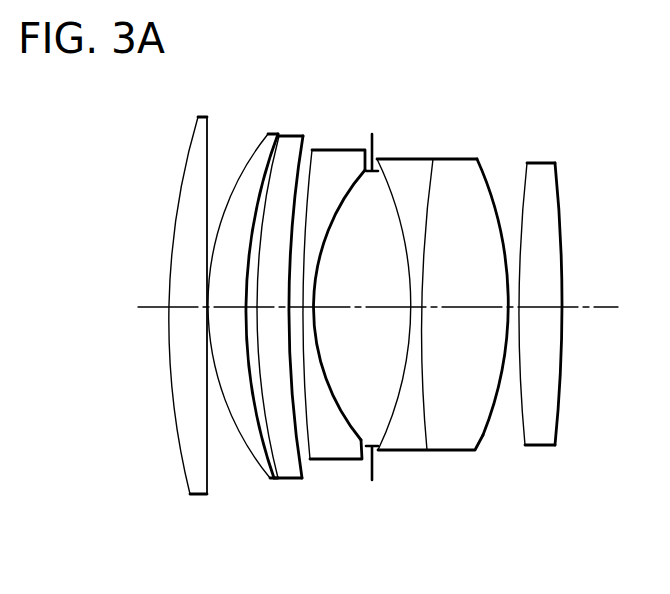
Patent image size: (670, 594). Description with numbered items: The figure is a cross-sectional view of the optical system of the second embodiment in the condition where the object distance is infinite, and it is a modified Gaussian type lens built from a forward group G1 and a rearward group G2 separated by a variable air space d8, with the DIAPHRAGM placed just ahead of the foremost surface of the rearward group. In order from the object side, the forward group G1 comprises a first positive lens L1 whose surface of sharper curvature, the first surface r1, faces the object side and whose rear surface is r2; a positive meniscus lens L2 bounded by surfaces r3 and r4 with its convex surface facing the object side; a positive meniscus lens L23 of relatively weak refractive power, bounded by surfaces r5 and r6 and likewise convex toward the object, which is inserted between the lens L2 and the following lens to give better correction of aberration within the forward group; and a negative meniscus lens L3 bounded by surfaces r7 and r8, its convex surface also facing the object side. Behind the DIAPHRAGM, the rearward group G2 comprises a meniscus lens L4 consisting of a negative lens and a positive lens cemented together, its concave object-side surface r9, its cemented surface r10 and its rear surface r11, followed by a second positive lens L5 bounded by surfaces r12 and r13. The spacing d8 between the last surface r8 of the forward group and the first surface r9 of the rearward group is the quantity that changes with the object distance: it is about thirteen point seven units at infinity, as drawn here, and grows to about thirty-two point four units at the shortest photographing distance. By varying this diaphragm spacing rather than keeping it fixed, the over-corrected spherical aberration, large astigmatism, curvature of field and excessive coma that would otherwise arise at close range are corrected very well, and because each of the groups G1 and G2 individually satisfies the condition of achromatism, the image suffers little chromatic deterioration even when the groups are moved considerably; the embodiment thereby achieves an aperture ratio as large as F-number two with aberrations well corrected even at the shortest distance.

The forward group G1 is at (367, 66).
The rearward group G2 is at (567, 66).
The first positive lens L1 is at (202, 116).
The positive meniscus lens L2 is at (273, 133).
The positive meniscus lens L23 is at (292, 136).
The negative meniscus lens L3 is at (343, 150).
The meniscus lens L4 is at (480, 132).
The second positive lens L5 is at (543, 163).
The first lens surface r1 is at (190, 494).
The second lens surface r2 is at (207, 494).
The third lens surface r3 is at (268, 478).
The fourth lens surface r4 is at (275, 478).
The fifth lens surface r5 is at (279, 478).
The sixth lens surface r6 is at (300, 478).
The seventh lens surface r7 is at (311, 459).
The eighth lens surface r8 is at (343, 459).
The ninth lens surface r9 is at (386, 452).
The tenth lens surface r10 is at (427, 450).
The eleventh lens surface r11 is at (482, 438).
The twelfth lens surface r12 is at (524, 447).
The thirteenth lens surface r13 is at (558, 445).
The variable air space d8 is at (362, 290).
The diaphragm DIAPHRAGM is at (372, 362).